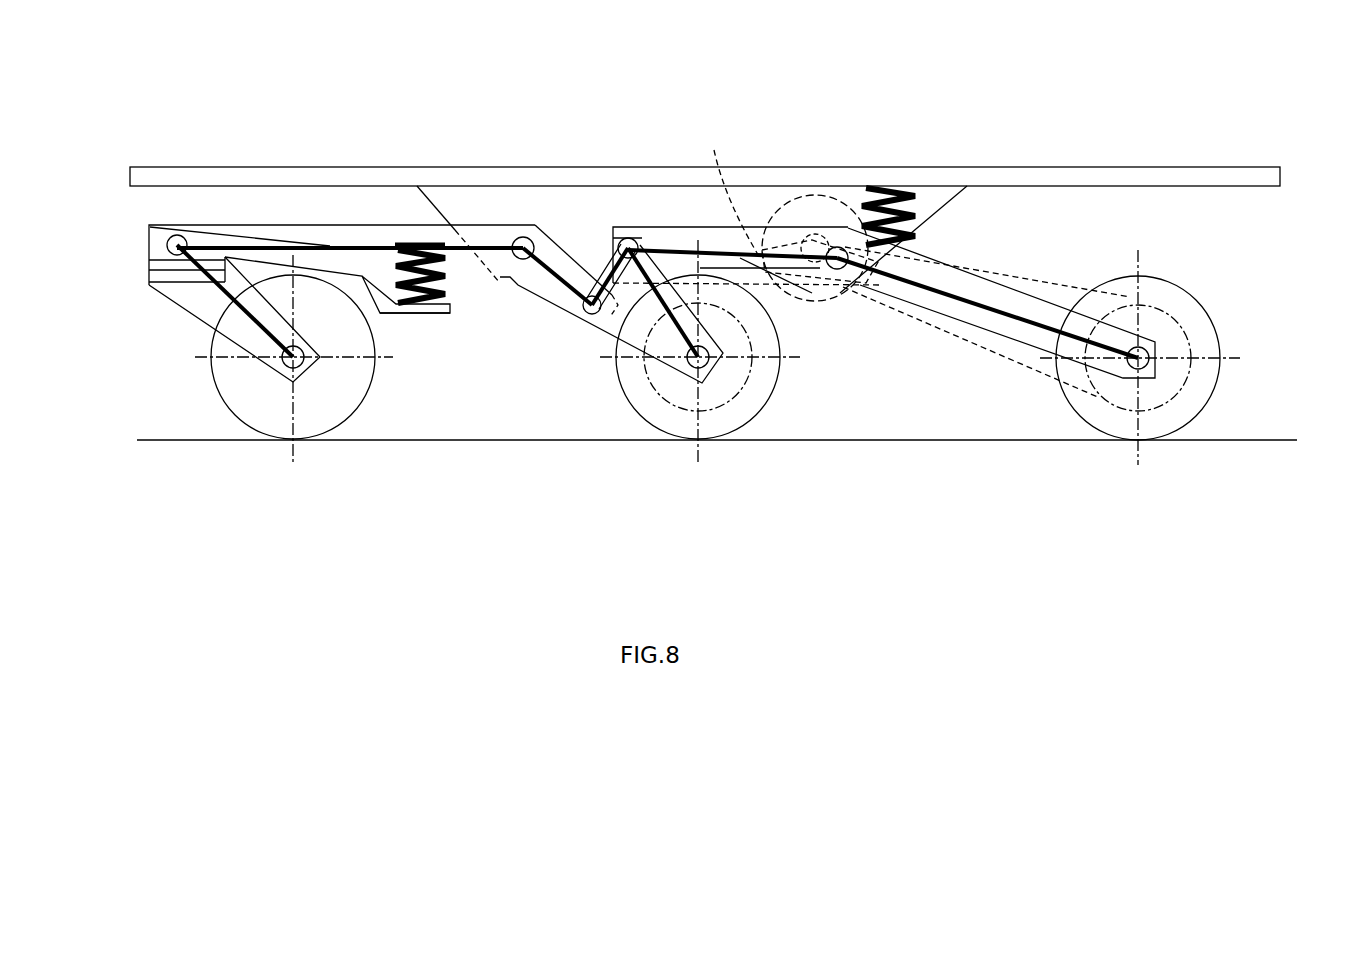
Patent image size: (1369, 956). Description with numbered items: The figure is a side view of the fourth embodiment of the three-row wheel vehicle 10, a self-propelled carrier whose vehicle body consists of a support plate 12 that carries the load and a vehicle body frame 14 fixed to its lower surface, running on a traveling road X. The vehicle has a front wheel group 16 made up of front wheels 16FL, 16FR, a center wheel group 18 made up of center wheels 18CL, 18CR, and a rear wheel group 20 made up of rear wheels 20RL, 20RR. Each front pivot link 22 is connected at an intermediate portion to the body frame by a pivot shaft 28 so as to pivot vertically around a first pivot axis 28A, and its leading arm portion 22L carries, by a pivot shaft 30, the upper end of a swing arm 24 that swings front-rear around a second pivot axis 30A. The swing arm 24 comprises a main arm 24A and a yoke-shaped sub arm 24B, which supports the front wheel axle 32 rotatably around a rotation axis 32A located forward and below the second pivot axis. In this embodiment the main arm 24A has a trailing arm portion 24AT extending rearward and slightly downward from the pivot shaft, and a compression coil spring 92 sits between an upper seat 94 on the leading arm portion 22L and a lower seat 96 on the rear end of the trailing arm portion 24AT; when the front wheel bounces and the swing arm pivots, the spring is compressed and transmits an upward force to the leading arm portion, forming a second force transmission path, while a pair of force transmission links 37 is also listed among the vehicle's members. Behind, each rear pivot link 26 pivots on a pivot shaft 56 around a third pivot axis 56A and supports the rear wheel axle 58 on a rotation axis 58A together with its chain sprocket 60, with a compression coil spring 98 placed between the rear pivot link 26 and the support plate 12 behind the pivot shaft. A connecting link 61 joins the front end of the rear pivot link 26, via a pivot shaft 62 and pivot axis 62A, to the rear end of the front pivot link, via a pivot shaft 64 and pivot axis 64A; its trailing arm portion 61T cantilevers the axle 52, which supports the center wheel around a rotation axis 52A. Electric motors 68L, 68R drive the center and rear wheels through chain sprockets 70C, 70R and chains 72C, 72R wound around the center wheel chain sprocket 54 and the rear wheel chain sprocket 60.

The three-row wheel vehicle 10 is at (130, 142).
The support plate 12 is at (1216, 172).
The vehicle body frame 14 is at (940, 194).
The front wheel group 16 is at (308, 382).
The front left wheel 16FL is at (314, 382).
The front right wheel 16FR is at (320, 418).
The center wheel group 18 is at (718, 380).
The center left wheel 18CL is at (718, 380).
The center right wheel 18CR is at (726, 420).
The rear wheel group 20 is at (1191, 375).
The rear left wheel 20RL is at (1191, 375).
The rear right wheel 20RR is at (1170, 425).
The front pivot link 22 is at (467, 222).
The leading arm portion 22L is at (326, 224).
The swing arm 24 is at (300, 253).
The main arm 24A is at (150, 251).
The trailing arm portion 24AT is at (272, 232).
The sub arm 24B is at (205, 309).
The rear pivot link 26 is at (1022, 283).
The pivot shaft 28 is at (554, 230).
The first pivot axis 28A is at (521, 237).
The pivot shaft 30 is at (130, 190).
The second pivot axis 30A is at (166, 240).
The axle 32 is at (300, 366).
The rotation axis 32A is at (308, 366).
The force transmission link 37 is at (355, 240).
The axle 52 is at (740, 424).
The rotation axis 52A is at (692, 374).
The chain sprocket 54 is at (742, 405).
The pivot shaft 56 is at (820, 236).
The third pivot axis 56A is at (836, 272).
The axle 58 is at (1203, 372).
The rotation axis 58A is at (1150, 362).
The chain sprocket 60 is at (1185, 308).
The connecting link 61 is at (597, 262).
The trailing arm portion 61T is at (646, 420).
The pivot shaft 62 is at (725, 242).
The pivot axis 62A is at (626, 238).
The pivot shaft 64 is at (581, 326).
The pivot axis 64A is at (588, 315).
The electric motor 68L is at (971, 342).
The electric motor 68R is at (858, 300).
The chain sprocket 70C is at (806, 198).
The chain sprocket 70R is at (812, 234).
The chain 72C is at (727, 191).
The chain 72R is at (972, 262).
The compression coil spring 92 is at (455, 276).
The upper seat 94 is at (402, 242).
The lower seat 96 is at (421, 314).
The compression coil spring 98 is at (900, 198).
The traveling road X is at (492, 432).